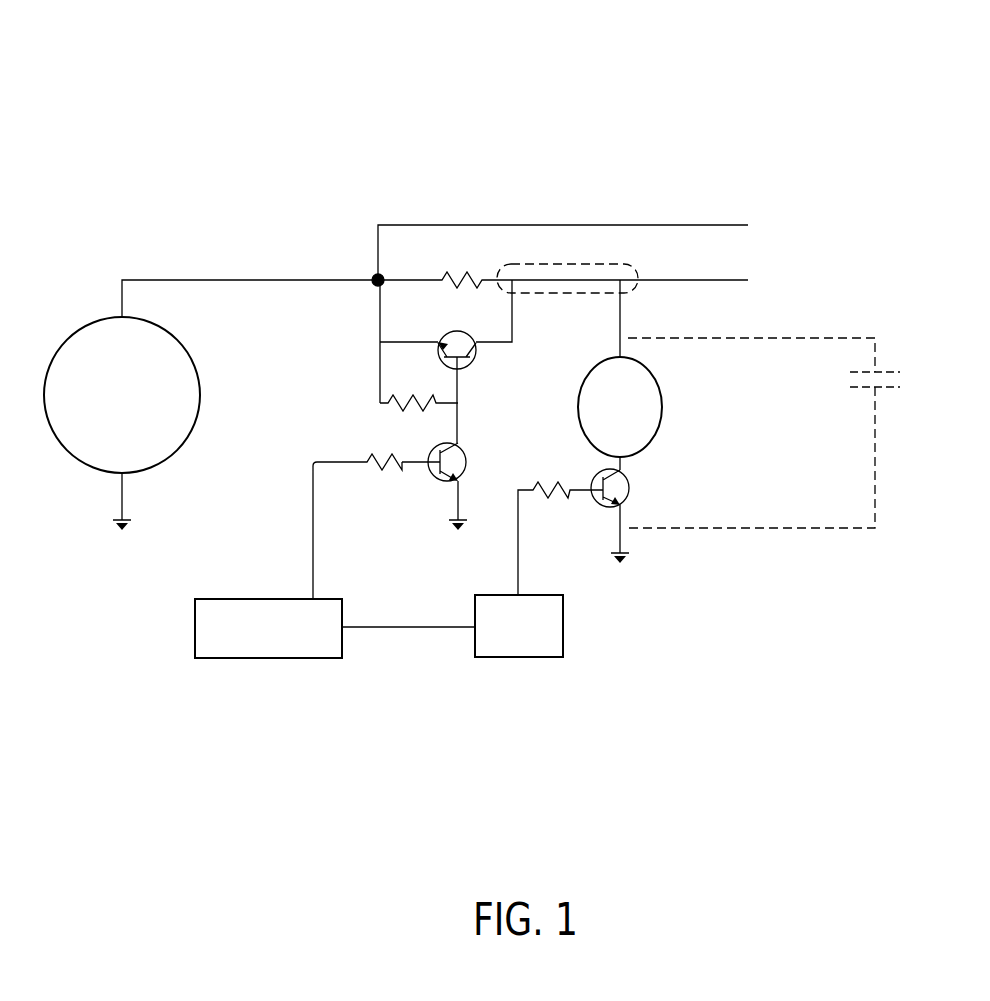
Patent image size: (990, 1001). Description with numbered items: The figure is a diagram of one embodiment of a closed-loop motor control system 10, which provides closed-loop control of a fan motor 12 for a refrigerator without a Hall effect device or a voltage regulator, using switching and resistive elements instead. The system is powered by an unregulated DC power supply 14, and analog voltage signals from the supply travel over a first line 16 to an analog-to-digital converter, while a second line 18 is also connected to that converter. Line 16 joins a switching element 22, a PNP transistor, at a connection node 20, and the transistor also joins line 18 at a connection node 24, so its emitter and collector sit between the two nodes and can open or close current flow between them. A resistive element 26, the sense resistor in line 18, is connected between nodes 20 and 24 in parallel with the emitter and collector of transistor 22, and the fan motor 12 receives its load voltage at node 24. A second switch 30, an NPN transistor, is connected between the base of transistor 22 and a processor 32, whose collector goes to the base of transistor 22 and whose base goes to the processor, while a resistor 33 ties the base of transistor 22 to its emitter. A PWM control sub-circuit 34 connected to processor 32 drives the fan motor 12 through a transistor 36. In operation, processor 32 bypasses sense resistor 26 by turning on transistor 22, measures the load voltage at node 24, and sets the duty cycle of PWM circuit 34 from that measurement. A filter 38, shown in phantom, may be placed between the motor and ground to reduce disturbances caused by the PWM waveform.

The closed-loop motor control system 10 is at (498, 62).
The fan motor 12 is at (663, 393).
The unregulated DC power supply 14 is at (88, 323).
The first line 16 is at (627, 222).
The second line 18 is at (690, 283).
The connection node 20 is at (370, 276).
The switching element 22 is at (478, 358).
The connection node 24 is at (560, 262).
The resistive element 26 is at (440, 275).
The second switch 30 is at (470, 462).
The processor 32 is at (193, 624).
The resistor 33 is at (400, 410).
The PWM control sub-circuit 34 is at (565, 627).
The transistor 36 is at (630, 488).
The filter 38 is at (845, 380).